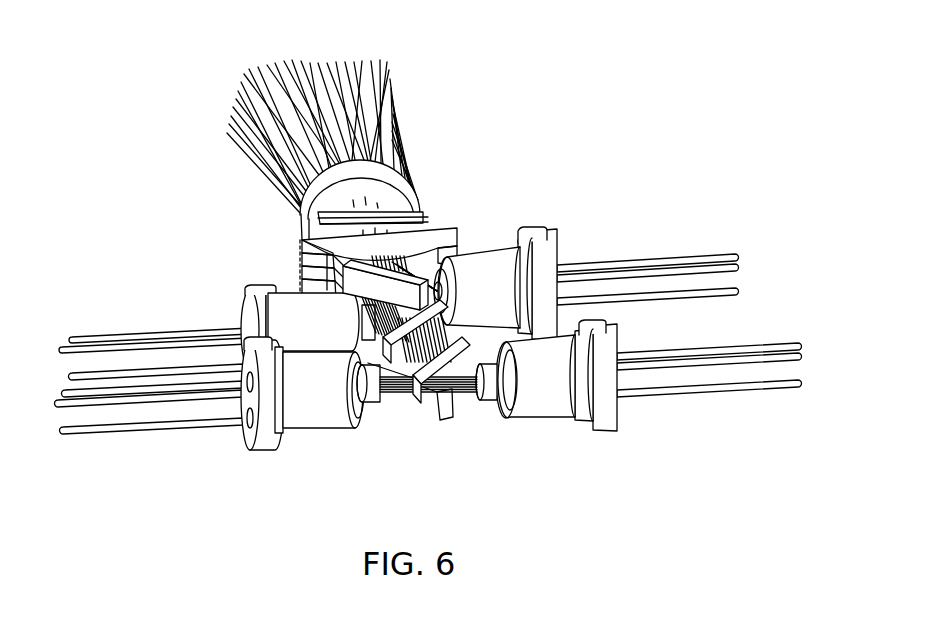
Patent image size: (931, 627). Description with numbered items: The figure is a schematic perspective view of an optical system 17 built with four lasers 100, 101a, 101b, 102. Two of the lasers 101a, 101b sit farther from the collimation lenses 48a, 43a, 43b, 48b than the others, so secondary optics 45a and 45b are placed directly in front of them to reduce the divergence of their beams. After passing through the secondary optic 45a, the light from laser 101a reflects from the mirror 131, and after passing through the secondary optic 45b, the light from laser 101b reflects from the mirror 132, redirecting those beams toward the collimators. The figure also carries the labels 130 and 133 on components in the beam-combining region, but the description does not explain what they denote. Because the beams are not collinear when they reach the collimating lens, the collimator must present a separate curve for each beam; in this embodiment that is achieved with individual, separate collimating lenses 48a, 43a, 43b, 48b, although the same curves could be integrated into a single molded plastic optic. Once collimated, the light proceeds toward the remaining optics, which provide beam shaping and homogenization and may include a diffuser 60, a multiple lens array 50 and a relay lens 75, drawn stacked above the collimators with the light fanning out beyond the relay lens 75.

The optical system 17 is at (180, 209).
The relay lens 75 is at (300, 213).
The multiple lens array 50 is at (414, 208).
The diffuser 60 is at (425, 223).
The collimation lens 48a is at (302, 249).
The collimation lens 43a is at (302, 262).
The collimation lens 43b is at (302, 278).
The collimation lens 48b is at (302, 293).
The laser 100 is at (250, 291).
The laser 102 is at (535, 230).
The third laser diode 130 is at (363, 369).
The first dichroic mirror 133 is at (370, 298).
The mirror 131 is at (417, 403).
The mirror 132 is at (443, 418).
The secondary optic 45a is at (368, 405).
The secondary optic 45b is at (485, 403).
The laser 101a is at (268, 450).
The laser 101b is at (612, 413).